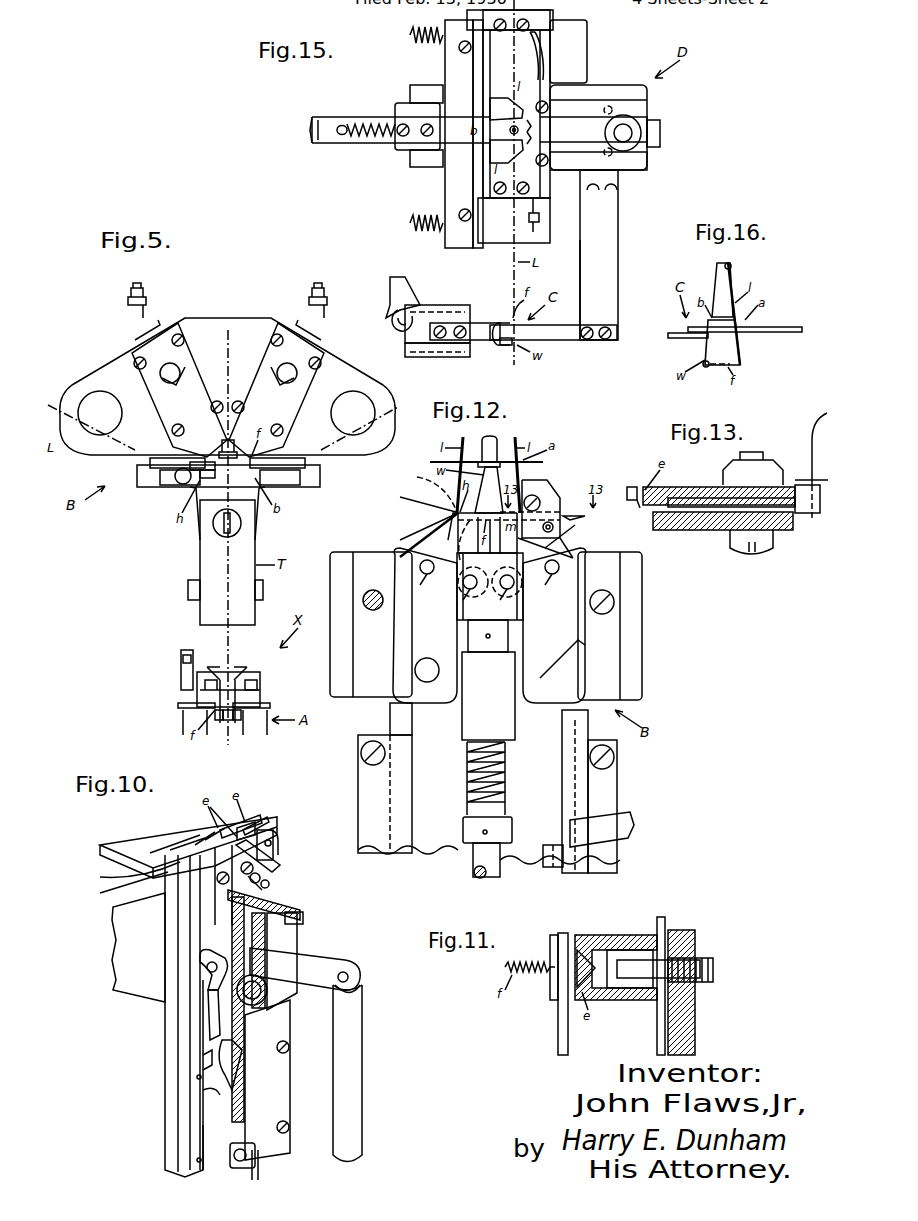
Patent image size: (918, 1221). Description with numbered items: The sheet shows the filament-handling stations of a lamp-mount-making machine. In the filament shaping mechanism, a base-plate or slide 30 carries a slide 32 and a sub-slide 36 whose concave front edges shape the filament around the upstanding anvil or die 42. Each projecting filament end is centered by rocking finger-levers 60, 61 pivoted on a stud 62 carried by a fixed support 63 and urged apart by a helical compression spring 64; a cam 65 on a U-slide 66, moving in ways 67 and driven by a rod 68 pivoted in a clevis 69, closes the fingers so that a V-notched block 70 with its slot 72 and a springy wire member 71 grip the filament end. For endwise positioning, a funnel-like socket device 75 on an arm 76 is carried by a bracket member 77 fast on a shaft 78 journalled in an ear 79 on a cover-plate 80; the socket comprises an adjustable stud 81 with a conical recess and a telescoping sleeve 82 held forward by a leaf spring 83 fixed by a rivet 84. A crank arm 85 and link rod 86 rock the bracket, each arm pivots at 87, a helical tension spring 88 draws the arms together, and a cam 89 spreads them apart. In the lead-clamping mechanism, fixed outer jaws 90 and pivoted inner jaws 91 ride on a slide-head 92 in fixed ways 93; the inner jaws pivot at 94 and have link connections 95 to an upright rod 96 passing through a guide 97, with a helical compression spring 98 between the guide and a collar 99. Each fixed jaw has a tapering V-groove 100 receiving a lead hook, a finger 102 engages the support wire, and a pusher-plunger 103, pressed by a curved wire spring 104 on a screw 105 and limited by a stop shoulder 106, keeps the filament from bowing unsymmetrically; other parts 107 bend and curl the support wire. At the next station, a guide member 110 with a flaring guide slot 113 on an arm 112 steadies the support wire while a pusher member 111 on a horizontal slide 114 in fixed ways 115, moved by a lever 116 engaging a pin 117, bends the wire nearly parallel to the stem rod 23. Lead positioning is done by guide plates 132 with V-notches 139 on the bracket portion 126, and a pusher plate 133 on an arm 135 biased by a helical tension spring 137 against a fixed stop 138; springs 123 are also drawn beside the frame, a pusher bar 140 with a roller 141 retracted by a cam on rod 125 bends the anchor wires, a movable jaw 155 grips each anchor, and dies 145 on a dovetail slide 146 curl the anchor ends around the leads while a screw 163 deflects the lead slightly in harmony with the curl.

In FIG. 16, the stem rod 23 is at (709, 313).
In FIG. 5, the base-plate or slide 30 is at (239, 726).
In FIG. 10, the base-plate or slide 30 is at (236, 809).
In FIG. 5, the slide 32 is at (254, 732).
In FIG. 10, the slide 32 is at (202, 814).
In FIG. 5, the sub-slide 36 is at (235, 732).
In FIG. 10, the sub-slide 36 is at (186, 816).
In FIG. 5, the anvil or die 42 is at (210, 732).
In FIG. 10, the anvil or die 42 is at (178, 829).
In FIG. 10, the finger-lever 60 is at (230, 934).
In FIG. 10, the finger-lever 61 is at (219, 1007).
In FIG. 10, the stud 62 is at (179, 985).
In FIG. 10, the fixed support 63 is at (141, 1016).
In FIG. 10, the helical compression spring 64 is at (145, 947).
In FIG. 10, the cam 65 is at (172, 1060).
In FIG. 10, the U-slide 66 is at (171, 1147).
In FIG. 10, the ways 67 is at (176, 1087).
In FIG. 15, the rod 68 is at (499, 352).
In FIG. 10, the rod 68 is at (276, 1165).
In FIG. 10, the clevis 69 is at (235, 1163).
In FIG. 5, the block 70 is at (224, 706).
In FIG. 10, the block 70 is at (194, 836).
In FIG. 11, the block 70 is at (538, 965).
In FIG. 10, the wire member 71 is at (205, 879).
In FIG. 11, the wire member 71 is at (536, 994).
In FIG. 10, the slot 72 is at (167, 835).
In FIG. 5, the socket device 75 is at (202, 692).
In FIG. 10, the socket device 75 is at (251, 814).
In FIG. 11, the socket device 75 is at (602, 1000).
In FIG. 5, the arm 76 is at (266, 678).
In FIG. 10, the arm 76 is at (291, 845).
In FIG. 11, the arm 76 is at (698, 992).
In FIG. 5, the bracket member 77 is at (239, 678).
In FIG. 10, the bracket member 77 is at (296, 961).
In FIG. 10, the shaft 78 is at (275, 1006).
In FIG. 10, the lug or ear 79 is at (330, 990).
In FIG. 10, the cover-plate 80 is at (279, 1080).
In FIG. 10, the stud 81 is at (284, 841).
In FIG. 11, the stud 81 is at (668, 947).
In FIG. 11, the sleeve 82 is at (616, 982).
In FIG. 10, the leaf spring 83 is at (271, 824).
In FIG. 11, the leaf spring 83 is at (678, 980).
In FIG. 10, the rivet 84 is at (279, 862).
In FIG. 5, the crank arm 85 is at (167, 670).
In FIG. 10, the crank arm 85 is at (307, 963).
In FIG. 10, the link rod 86 is at (367, 1073).
In FIG. 10, the pivot 87 is at (305, 922).
In FIG. 5, the helical tension spring 88 is at (211, 663).
In FIG. 10, the helical tension spring 88 is at (287, 885).
In FIG. 5, the cam 89 is at (241, 663).
In FIG. 10, the cam 89 is at (280, 905).
In FIG. 5, the clamping jaw 90 is at (213, 485).
In FIG. 12, the clamping jaw 90 is at (466, 516).
In FIG. 13, the clamping jaw 90 is at (719, 484).
In FIG. 12, the clamping jaw 91 is at (509, 520).
In FIG. 13, the clamping jaw 91 is at (633, 483).
In FIG. 5, the slide-head 92 is at (241, 475).
In FIG. 12, the slide-head 92 is at (487, 703).
In FIG. 12, the fixed ways 93 is at (618, 806).
In FIG. 12, the pivot 94 is at (489, 625).
In FIG. 12, the link connection 95 is at (490, 590).
In FIG. 12, the upright rod 96 is at (467, 860).
In FIG. 12, the guide 97 is at (472, 696).
In FIG. 12, the helical compression spring 98 is at (501, 778).
In FIG. 12, the collar 99 is at (496, 825).
In FIG. 12, the V-groove 100 is at (434, 515).
In FIG. 13, the V-groove 100 is at (726, 486).
In FIG. 5, the finger 102 is at (234, 442).
In FIG. 12, the finger 102 is at (526, 474).
In FIG. 5, the pusher-plunger 103 is at (176, 454).
In FIG. 12, the pusher-plunger 103 is at (528, 504).
In FIG. 13, the pusher-plunger 103 is at (723, 533).
In FIG. 5, the curved wire spring 104 is at (162, 488).
In FIG. 12, the curved wire spring 104 is at (592, 514).
In FIG. 13, the curved wire spring 104 is at (802, 466).
In FIG. 5, the screw 105 is at (180, 499).
In FIG. 12, the screw 105 is at (551, 493).
In FIG. 13, the screw 105 is at (769, 553).
In FIG. 12, the stop shoulder 106 is at (603, 839).
In FIG. 13, the stop shoulder 106 is at (809, 486).
In FIG. 5, the support-wire bending and curling parts 107 is at (228, 370).
In FIG. 15, the guide member 110 is at (553, 345).
In FIG. 16, the guide member 110 is at (745, 342).
In FIG. 15, the pusher member 111 is at (465, 313).
In FIG. 16, the pusher member 111 is at (683, 348).
In FIG. 15, the arm 112 is at (563, 290).
In FIG. 15, the guide slot 113 is at (494, 319).
In FIG. 15, the horizontal slide 114 is at (437, 311).
In FIG. 15, the fixed ways 115 is at (437, 363).
In FIG. 15, the lever or crank arm 116 is at (388, 297).
In FIG. 15, the pin 117 is at (384, 330).
In FIG. 15, the spring 123 is at (404, 136).
In FIG. 15, the rod 125 is at (644, 151).
In FIG. 15, the bracket portion 126 is at (610, 180).
In FIG. 15, the guide plate 132 is at (459, 126).
In FIG. 15, the pusher plate 133 is at (400, 148).
In FIG. 15, the support and actuating arm 135 is at (405, 124).
In FIG. 15, the helical tension spring 137 is at (366, 147).
In FIG. 15, the fixed stop 138 is at (316, 143).
In FIG. 15, the V-notch 139 is at (454, 144).
In FIG. 15, the pusher bar 140 is at (650, 137).
In FIG. 15, the roller 141 is at (672, 132).
In FIG. 15, the die 145 is at (551, 131).
In FIG. 15, the dovetail slide 146 is at (478, 20).
In FIG. 15, the movable jaw 155 is at (611, 151).
In FIG. 15, the screw 163 is at (532, 222).